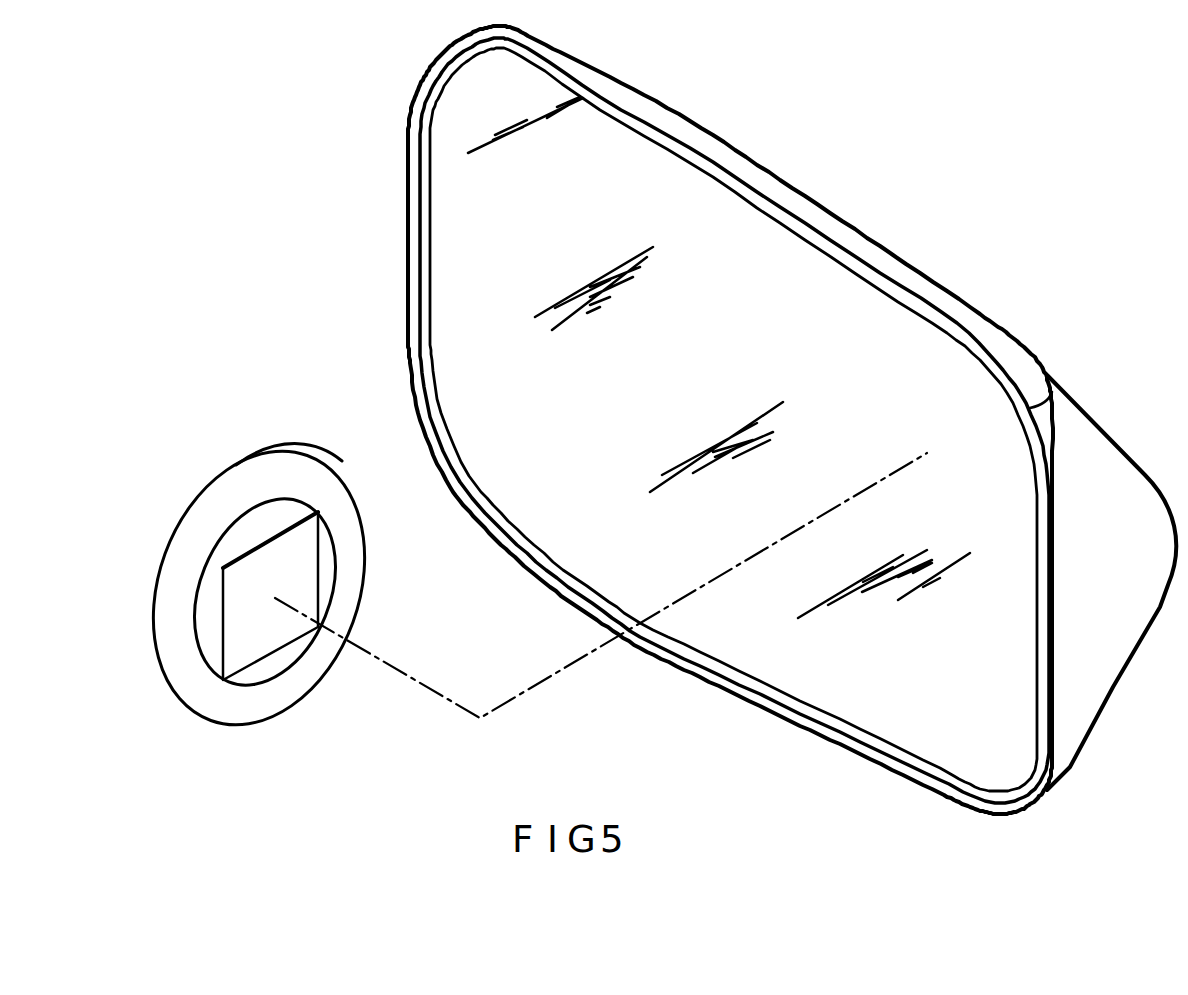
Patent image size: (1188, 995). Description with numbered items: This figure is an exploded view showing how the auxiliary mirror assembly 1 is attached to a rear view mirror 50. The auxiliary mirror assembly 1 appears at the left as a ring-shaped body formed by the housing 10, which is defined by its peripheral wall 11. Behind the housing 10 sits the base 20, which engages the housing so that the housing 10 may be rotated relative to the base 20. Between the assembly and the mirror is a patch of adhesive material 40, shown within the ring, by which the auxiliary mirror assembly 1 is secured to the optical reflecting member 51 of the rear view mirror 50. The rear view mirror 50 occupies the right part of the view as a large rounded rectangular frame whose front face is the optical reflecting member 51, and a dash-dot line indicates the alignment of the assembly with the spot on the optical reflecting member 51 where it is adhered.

The auxiliary mirror assembly 1 is at (153, 568).
The housing 10 is at (259, 575).
The peripheral wall 11 is at (289, 454).
The base 20 is at (185, 653).
The adhesive material 40 is at (273, 635).
The rear view mirror 50 is at (1088, 453).
The optical reflecting member 51 is at (647, 162).